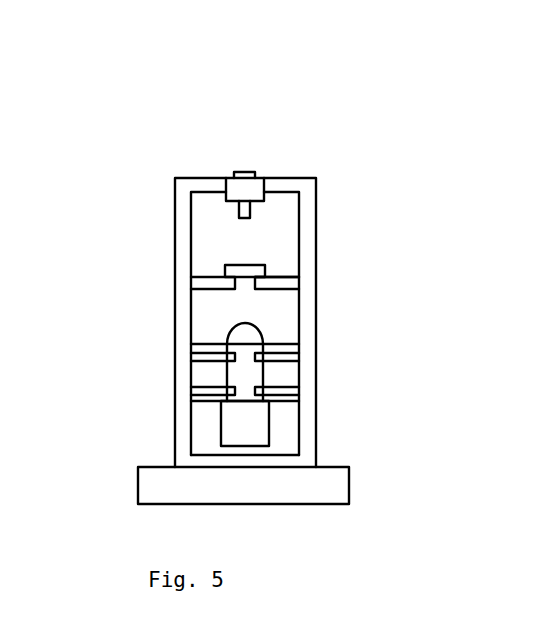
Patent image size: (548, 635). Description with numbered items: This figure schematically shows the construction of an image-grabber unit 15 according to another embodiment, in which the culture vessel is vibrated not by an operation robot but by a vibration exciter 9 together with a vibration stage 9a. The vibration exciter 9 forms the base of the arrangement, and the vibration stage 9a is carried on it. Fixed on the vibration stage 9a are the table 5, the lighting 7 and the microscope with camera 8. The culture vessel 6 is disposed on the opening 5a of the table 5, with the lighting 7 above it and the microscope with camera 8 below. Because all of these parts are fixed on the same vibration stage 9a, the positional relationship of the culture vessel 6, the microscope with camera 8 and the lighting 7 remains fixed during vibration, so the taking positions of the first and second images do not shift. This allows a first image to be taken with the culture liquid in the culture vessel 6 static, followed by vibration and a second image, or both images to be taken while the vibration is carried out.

The image-grabber unit 15 is at (156, 141).
The table 5 is at (211, 289).
The opening 5a is at (252, 282).
The culture vessel 6 is at (238, 265).
The lighting 7 is at (244, 172).
The microscope with camera 8 is at (253, 370).
The vibration exciter 9 is at (349, 486).
The vibration stage 9a is at (316, 232).